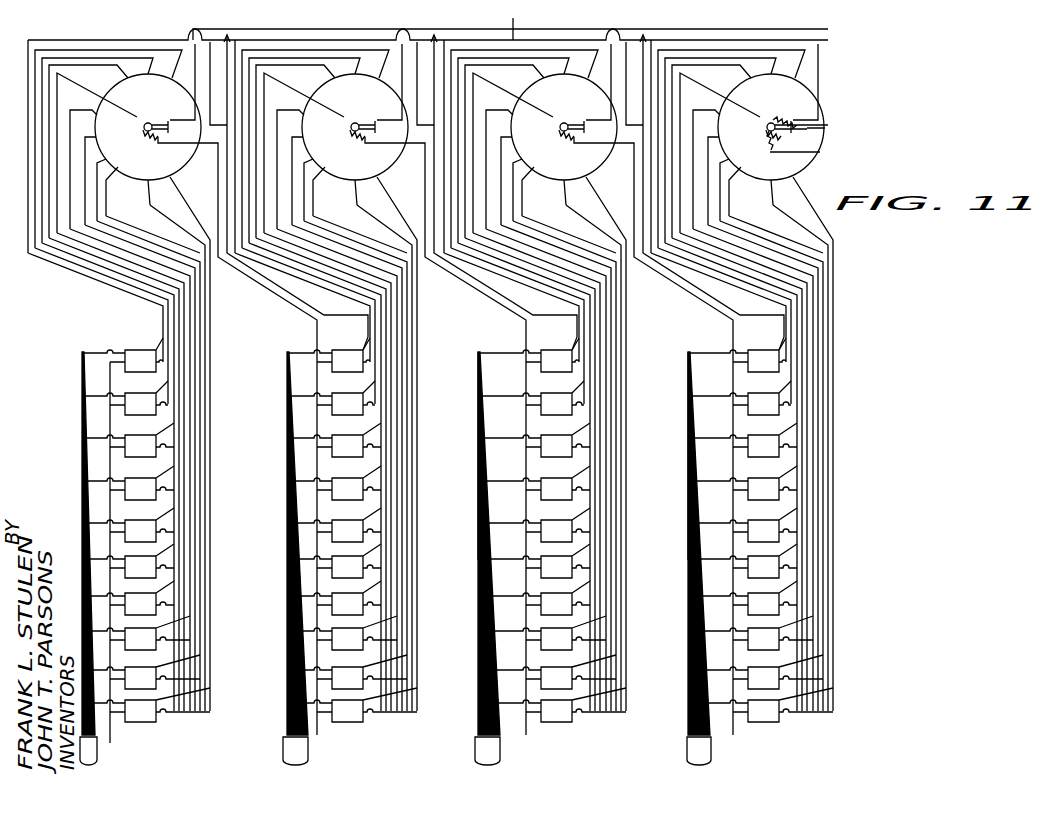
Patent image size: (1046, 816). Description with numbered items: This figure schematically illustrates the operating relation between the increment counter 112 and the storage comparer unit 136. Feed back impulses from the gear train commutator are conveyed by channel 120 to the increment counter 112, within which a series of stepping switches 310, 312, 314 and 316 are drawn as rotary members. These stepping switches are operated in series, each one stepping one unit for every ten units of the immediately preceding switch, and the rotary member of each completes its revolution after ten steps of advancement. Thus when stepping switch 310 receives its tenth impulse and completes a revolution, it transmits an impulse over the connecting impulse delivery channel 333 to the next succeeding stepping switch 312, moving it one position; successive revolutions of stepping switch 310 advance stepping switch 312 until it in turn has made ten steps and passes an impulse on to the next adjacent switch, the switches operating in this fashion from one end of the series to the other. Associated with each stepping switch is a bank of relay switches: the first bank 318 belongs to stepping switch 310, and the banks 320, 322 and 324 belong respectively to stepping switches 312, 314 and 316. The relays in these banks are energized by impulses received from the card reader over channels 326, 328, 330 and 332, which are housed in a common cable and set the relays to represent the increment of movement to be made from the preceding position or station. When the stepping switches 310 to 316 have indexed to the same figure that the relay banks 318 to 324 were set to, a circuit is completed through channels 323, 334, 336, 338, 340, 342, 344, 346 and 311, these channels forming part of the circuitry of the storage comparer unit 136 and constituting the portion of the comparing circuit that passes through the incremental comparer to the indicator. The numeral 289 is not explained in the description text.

The increment counter 112 is at (490, 18).
The channel 120 is at (829, 118).
The storage comparer unit 136 is at (76, 415).
The conductor 289 is at (513, 18).
The stepping switch 310 is at (771, 127).
The channel 311 is at (818, 164).
The stepping switch 312 is at (564, 127).
The stepping switch 314 is at (355, 127).
The stepping switch 316 is at (162, 174).
The bank of relay switches 318 is at (787, 530).
The bank of relay switches 320 is at (577, 530).
The bank of relay switches 322 is at (378, 530).
The channel 323 is at (113, 735).
The bank of relay switches 324 is at (262, 603).
The channel 326 is at (729, 560).
The channel 328 is at (515, 562).
The channel 330 is at (331, 559).
The channel 332 is at (97, 752).
The connecting impulse delivery channel 333 is at (707, 40).
The channel 334 is at (201, 349).
The channel 336 is at (263, 385).
The channel 338 is at (354, 444).
The channel 340 is at (471, 385).
The channel 342 is at (560, 444).
The channel 344 is at (679, 385).
The channel 346 is at (772, 444).